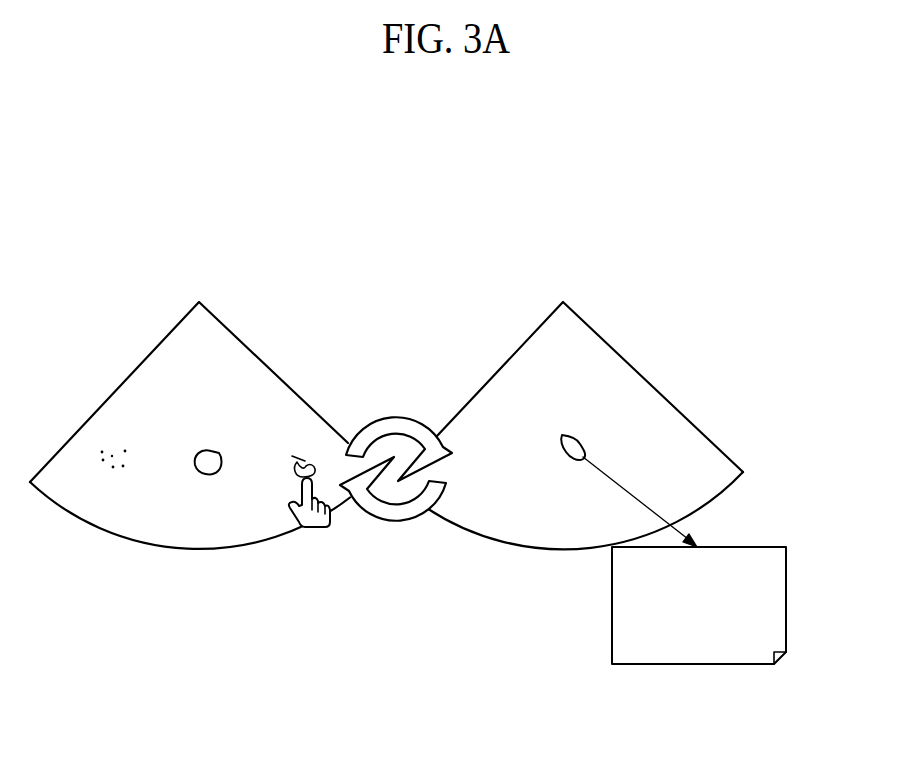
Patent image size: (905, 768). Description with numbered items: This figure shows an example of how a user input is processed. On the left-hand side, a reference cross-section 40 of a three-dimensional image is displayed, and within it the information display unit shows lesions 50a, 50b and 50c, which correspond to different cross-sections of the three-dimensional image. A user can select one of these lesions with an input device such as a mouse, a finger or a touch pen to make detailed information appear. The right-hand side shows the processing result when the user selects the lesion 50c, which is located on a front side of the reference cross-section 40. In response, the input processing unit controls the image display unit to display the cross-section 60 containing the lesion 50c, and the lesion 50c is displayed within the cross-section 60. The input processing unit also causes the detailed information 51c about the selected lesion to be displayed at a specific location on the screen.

The reference cross-section 40 is at (212, 340).
The cross-section 60 is at (583, 337).
The lesion 50a is at (211, 453).
The lesion 50b is at (112, 447).
The lesion 50c is at (304, 462).
The detailed information 51c is at (770, 558).